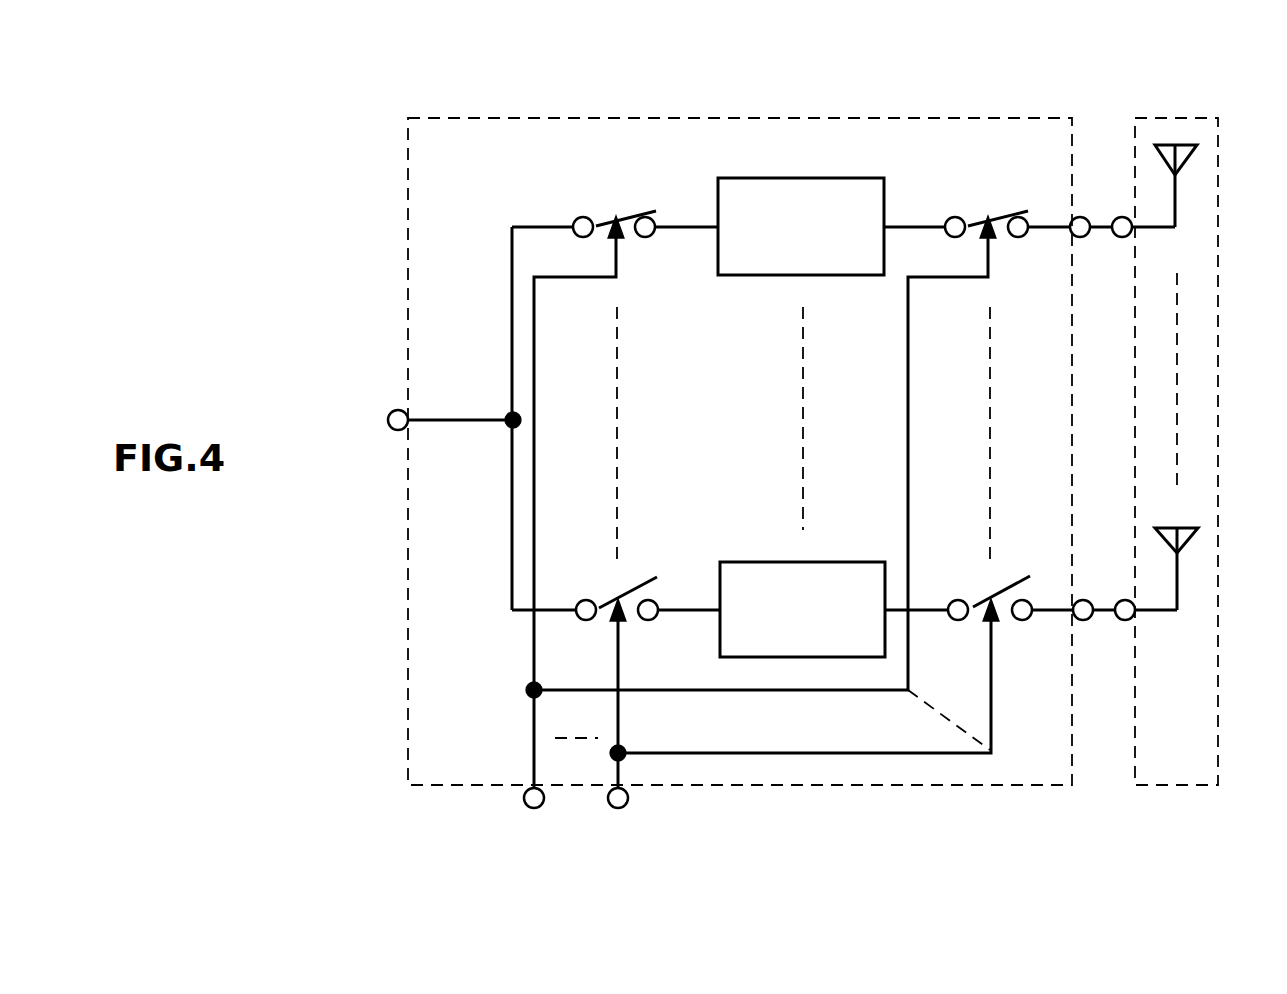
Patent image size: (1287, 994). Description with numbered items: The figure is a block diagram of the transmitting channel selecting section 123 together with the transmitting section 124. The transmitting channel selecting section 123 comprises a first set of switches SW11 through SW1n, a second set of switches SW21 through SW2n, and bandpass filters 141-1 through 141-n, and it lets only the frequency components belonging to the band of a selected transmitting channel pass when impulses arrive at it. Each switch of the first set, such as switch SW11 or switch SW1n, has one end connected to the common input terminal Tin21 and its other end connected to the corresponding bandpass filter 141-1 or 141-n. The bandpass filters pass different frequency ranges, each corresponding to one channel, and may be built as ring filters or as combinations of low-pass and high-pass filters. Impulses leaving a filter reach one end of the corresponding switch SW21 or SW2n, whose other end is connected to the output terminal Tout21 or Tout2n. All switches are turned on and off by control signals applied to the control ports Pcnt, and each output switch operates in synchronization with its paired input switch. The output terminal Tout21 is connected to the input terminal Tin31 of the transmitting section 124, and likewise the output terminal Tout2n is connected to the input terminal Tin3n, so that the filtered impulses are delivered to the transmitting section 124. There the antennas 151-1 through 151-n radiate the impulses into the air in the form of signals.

The transmitting channel selecting section 123 is at (553, 118).
The transmitting section 124 is at (1152, 110).
The bandpass filter 141-1 is at (778, 178).
The bandpass filter 141-n is at (782, 562).
The antenna 151-1 is at (1170, 150).
The antenna 151-n is at (1190, 545).
The switch SW11 is at (616, 225).
The switch SW21 is at (988, 225).
The switch SW1n is at (618, 605).
The switch SW2n is at (992, 600).
The input terminal Tin21 is at (393, 412).
The output terminal Tout21 is at (1080, 222).
The input terminal Tin31 is at (1122, 222).
The output terminal Tout2n is at (1083, 620).
The input terminal Tin3n is at (1125, 620).
The control ports Pcnt is at (619, 819).